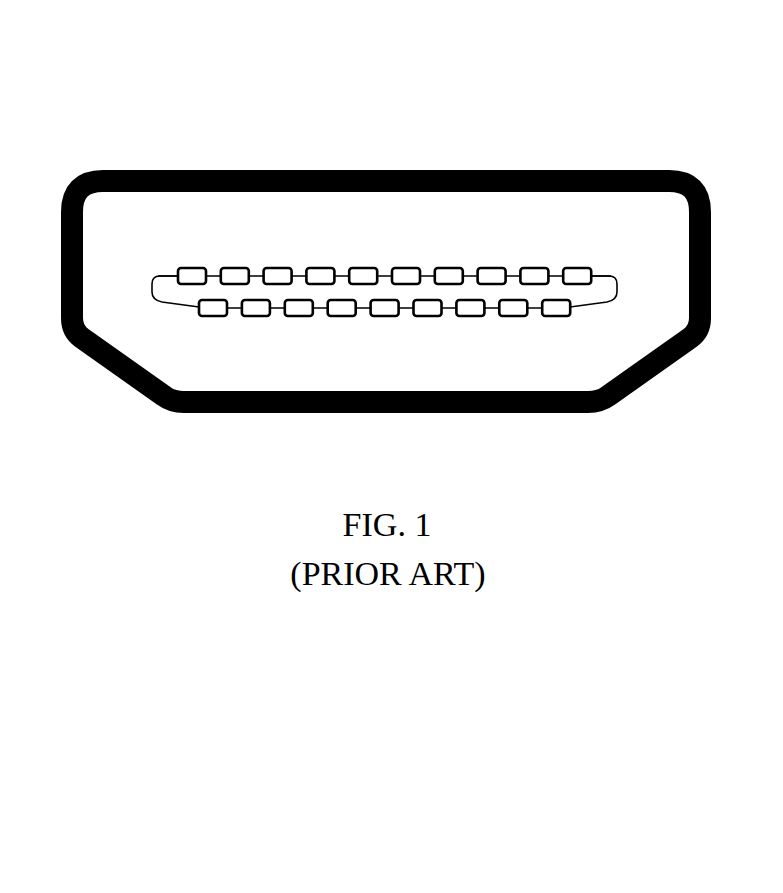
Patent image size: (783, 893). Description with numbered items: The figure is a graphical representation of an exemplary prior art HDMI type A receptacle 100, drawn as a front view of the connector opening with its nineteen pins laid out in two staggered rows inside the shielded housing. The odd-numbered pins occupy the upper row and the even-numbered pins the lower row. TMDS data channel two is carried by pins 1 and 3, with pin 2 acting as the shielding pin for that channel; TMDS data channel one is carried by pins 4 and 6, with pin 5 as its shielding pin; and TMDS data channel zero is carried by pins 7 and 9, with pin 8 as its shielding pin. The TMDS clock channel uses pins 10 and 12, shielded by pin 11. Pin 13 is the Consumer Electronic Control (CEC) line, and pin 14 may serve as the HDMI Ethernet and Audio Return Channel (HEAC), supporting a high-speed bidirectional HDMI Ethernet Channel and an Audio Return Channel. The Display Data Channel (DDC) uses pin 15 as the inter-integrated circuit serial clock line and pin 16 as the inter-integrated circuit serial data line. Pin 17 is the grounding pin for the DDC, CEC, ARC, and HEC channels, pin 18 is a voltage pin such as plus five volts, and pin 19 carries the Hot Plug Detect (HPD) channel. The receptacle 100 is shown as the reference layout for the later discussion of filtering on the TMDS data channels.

The HDMI type A receptacle 100 is at (682, 91).
The TMDS data channel two pin 1 is at (577, 262).
The shielding pin for TMDS data channel two 2 is at (556, 322).
The TMDS data channel two pin 3 is at (534, 262).
The TMDS data channel one pin 4 is at (513, 322).
The shielding pin for TMDS data channel one 5 is at (492, 262).
The TMDS data channel one pin 6 is at (470, 322).
The TMDS data channel zero pin 7 is at (449, 262).
The shielding pin for TMDS data channel zero 8 is at (428, 322).
The TMDS data channel zero pin 9 is at (406, 262).
The TMDS clock channel pin 10 is at (385, 322).
The shielding pin for TMDS clock channel 11 is at (363, 262).
The TMDS clock channel pin 12 is at (342, 322).
The Consumer Electronic Control pin 13 is at (320, 262).
The HDMI Ethernet and Audio Return Channel pin 14 is at (299, 322).
The I2C serial clock channel pin for DDC 15 is at (278, 262).
The I2C serial data channel pin for DDC 16 is at (256, 322).
The grounding pin 17 is at (235, 262).
The voltage pin 18 is at (213, 322).
The Hot Plug Detect channel pin 19 is at (192, 262).